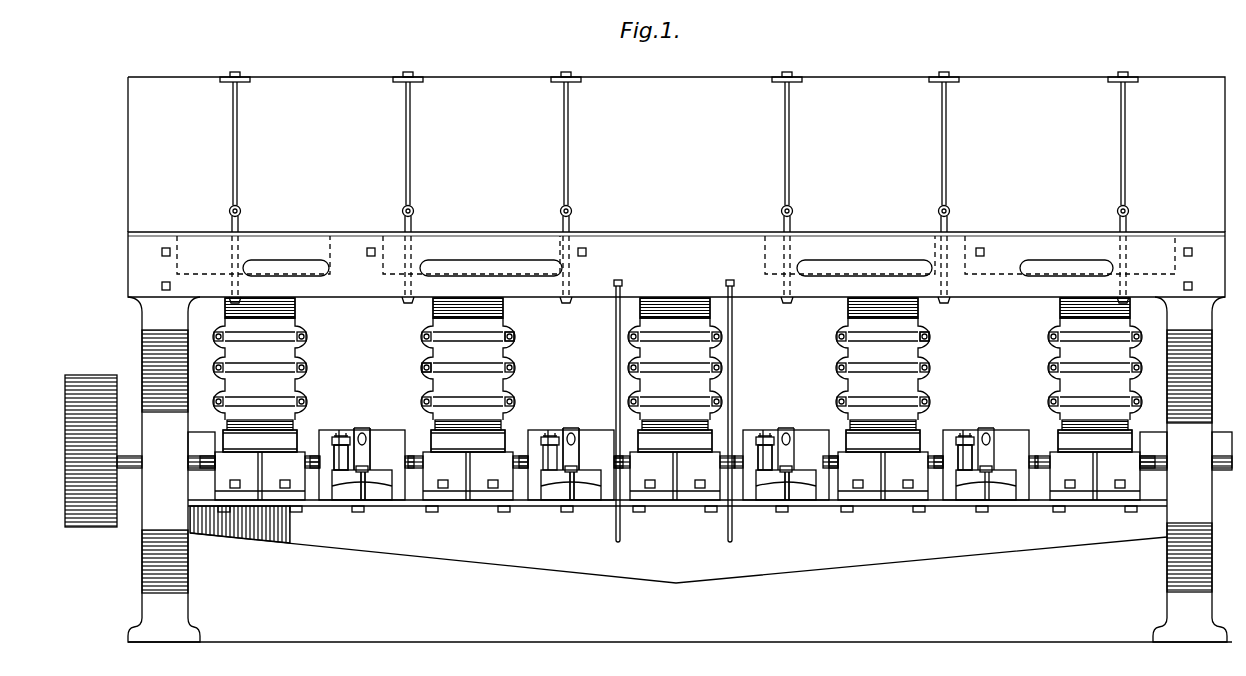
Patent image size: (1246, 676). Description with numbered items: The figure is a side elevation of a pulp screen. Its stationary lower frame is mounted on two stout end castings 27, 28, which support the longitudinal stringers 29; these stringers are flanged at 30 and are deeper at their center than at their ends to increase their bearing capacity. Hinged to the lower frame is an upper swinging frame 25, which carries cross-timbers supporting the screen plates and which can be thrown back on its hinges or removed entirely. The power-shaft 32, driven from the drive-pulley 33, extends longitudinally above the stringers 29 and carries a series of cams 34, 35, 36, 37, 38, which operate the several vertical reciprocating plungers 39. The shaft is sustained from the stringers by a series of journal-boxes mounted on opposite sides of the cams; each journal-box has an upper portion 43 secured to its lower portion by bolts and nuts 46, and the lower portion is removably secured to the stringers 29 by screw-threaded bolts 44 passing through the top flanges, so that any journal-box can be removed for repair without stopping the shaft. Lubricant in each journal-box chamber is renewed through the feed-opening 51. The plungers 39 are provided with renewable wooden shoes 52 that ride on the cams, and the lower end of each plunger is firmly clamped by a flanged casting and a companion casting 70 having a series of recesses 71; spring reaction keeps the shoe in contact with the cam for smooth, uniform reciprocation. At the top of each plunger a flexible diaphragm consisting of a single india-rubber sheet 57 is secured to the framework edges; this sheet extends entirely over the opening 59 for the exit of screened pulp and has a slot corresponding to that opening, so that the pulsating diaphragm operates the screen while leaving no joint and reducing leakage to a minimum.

The upper swinging frame 25 is at (676, 154).
The india-rubber sheet 57 is at (354, 234).
The opening 59 is at (289, 268).
The vertical reciprocating plungers 39 is at (296, 311).
The companion casting 70 is at (677, 405).
The recesses 71 is at (512, 368).
The drive-pulley 33 is at (88, 373).
The power-shaft 32 is at (131, 469).
The end casting 28 is at (164, 469).
The end casting 27 is at (1190, 469).
The cam 34 is at (260, 438).
The cam 35 is at (468, 440).
The cam 36 is at (675, 439).
The cam 37 is at (883, 438).
The cam 38 is at (1095, 440).
The upper portion of the journal-box 43 is at (592, 436).
The bolts and nuts 46 is at (342, 443).
The feed-opening 51 is at (365, 431).
The wooden shoes 52 is at (907, 420).
The screw-threaded bolts 44 is at (365, 491).
The flanges 30 is at (537, 504).
The longitudinal stringers 29 is at (677, 541).